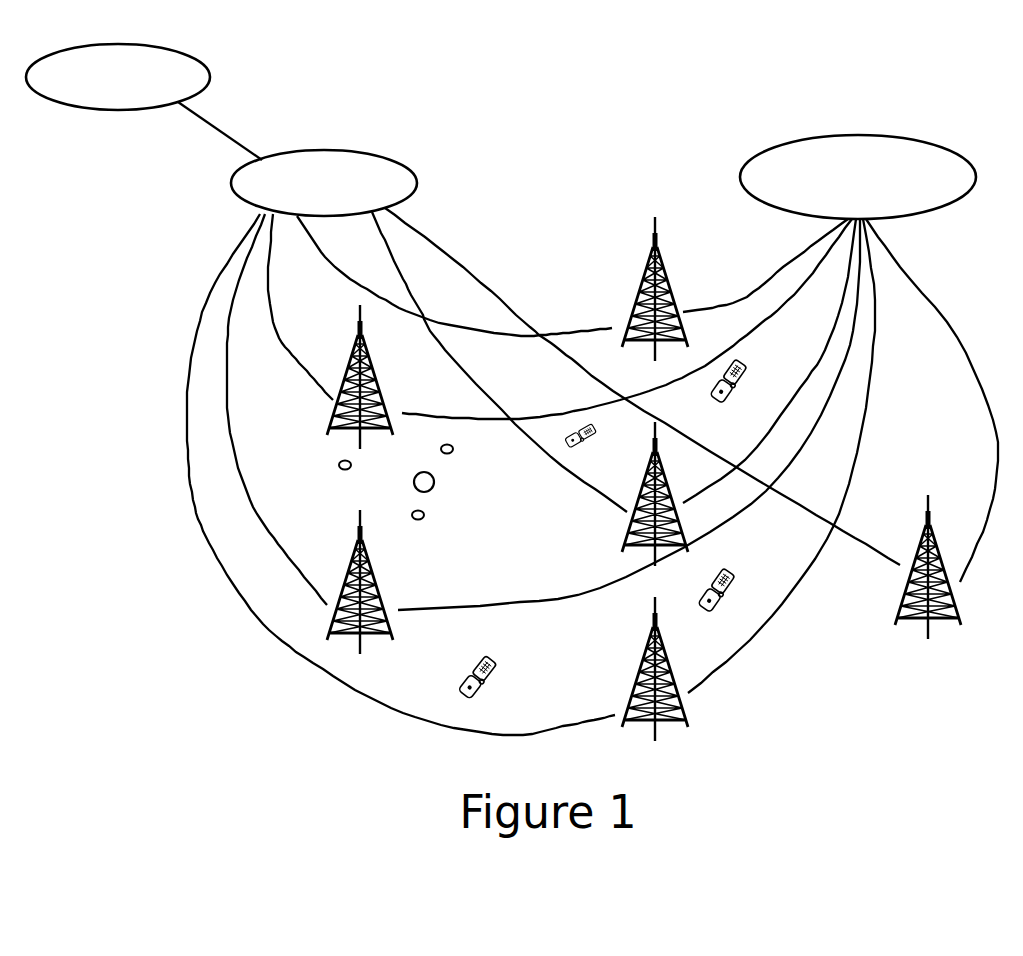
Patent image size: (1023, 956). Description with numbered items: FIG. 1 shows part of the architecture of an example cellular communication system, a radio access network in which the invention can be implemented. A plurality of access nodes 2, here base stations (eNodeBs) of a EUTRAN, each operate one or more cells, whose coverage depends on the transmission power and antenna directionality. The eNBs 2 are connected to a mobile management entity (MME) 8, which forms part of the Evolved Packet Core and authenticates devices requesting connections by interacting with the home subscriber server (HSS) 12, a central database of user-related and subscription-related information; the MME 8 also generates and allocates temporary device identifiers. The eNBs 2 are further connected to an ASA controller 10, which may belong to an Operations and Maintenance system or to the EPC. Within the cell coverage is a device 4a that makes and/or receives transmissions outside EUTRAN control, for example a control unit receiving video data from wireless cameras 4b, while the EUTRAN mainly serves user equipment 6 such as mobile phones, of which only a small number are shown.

The access node 2 is at (669, 283).
The device 4a is at (435, 484).
The wireless camera 4b is at (338, 464).
The user equipment 6 is at (745, 368).
The mobile management entity 8 is at (324, 183).
The ASA controller 10 is at (858, 177).
The home subscriber server 12 is at (118, 77).